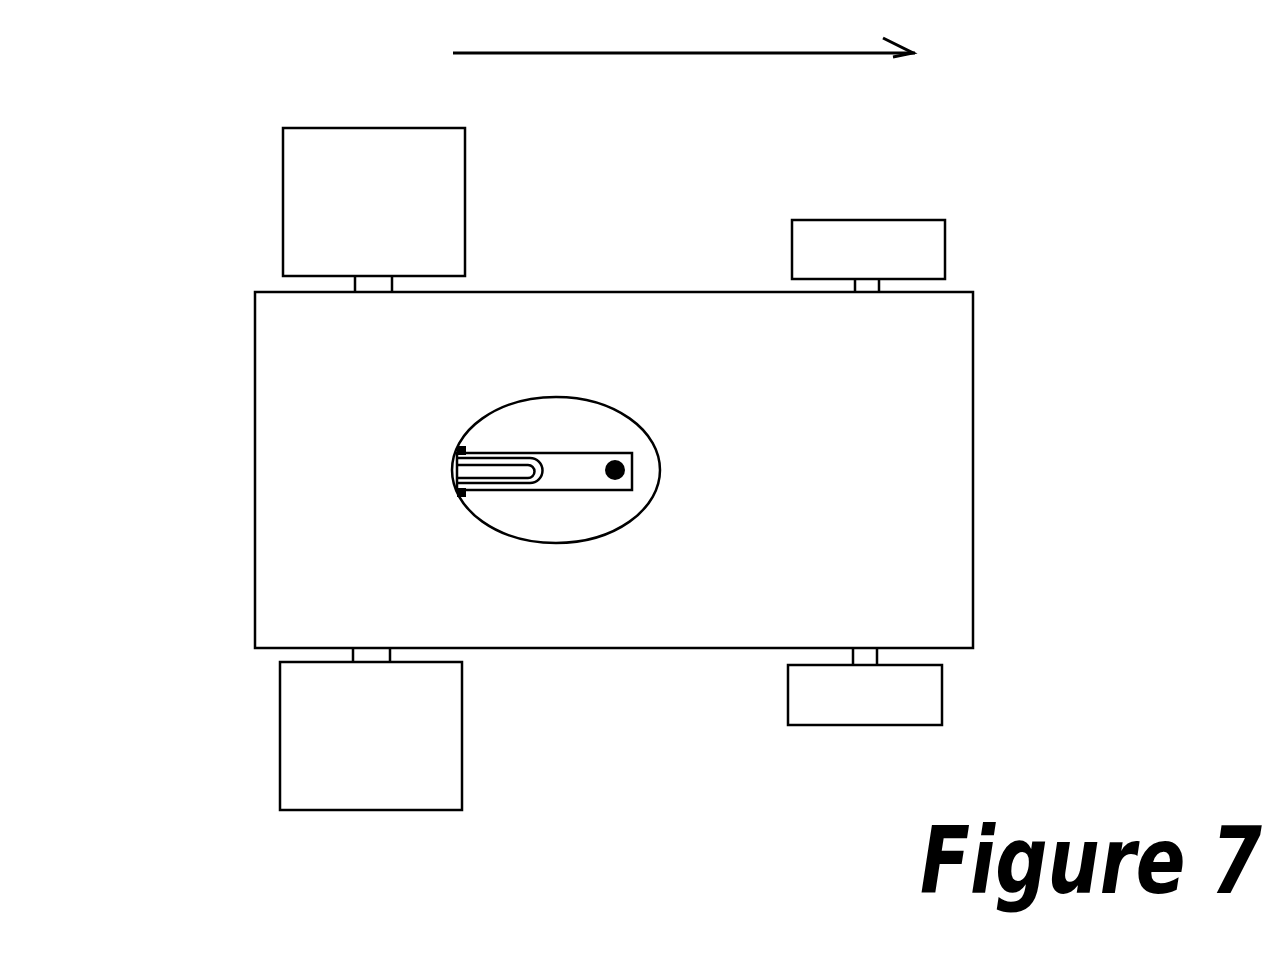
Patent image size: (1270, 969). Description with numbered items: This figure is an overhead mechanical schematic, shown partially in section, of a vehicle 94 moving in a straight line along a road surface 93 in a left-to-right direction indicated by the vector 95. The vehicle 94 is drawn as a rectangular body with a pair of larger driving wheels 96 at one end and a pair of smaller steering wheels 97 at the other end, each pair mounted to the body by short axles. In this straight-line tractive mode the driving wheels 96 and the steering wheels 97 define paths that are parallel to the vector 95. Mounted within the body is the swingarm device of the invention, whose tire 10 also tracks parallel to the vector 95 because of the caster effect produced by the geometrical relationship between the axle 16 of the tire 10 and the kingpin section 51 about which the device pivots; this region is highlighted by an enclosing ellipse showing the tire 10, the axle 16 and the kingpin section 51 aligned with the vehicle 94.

The tire 10 is at (470, 470).
The axle 16 is at (463, 448).
The kingpin section 51 is at (618, 468).
The road surface 93 is at (1165, 539).
The vehicle 94 is at (278, 400).
The vector 95 is at (684, 63).
The driving wheels 96 is at (323, 217).
The steering wheels 97 is at (815, 244).